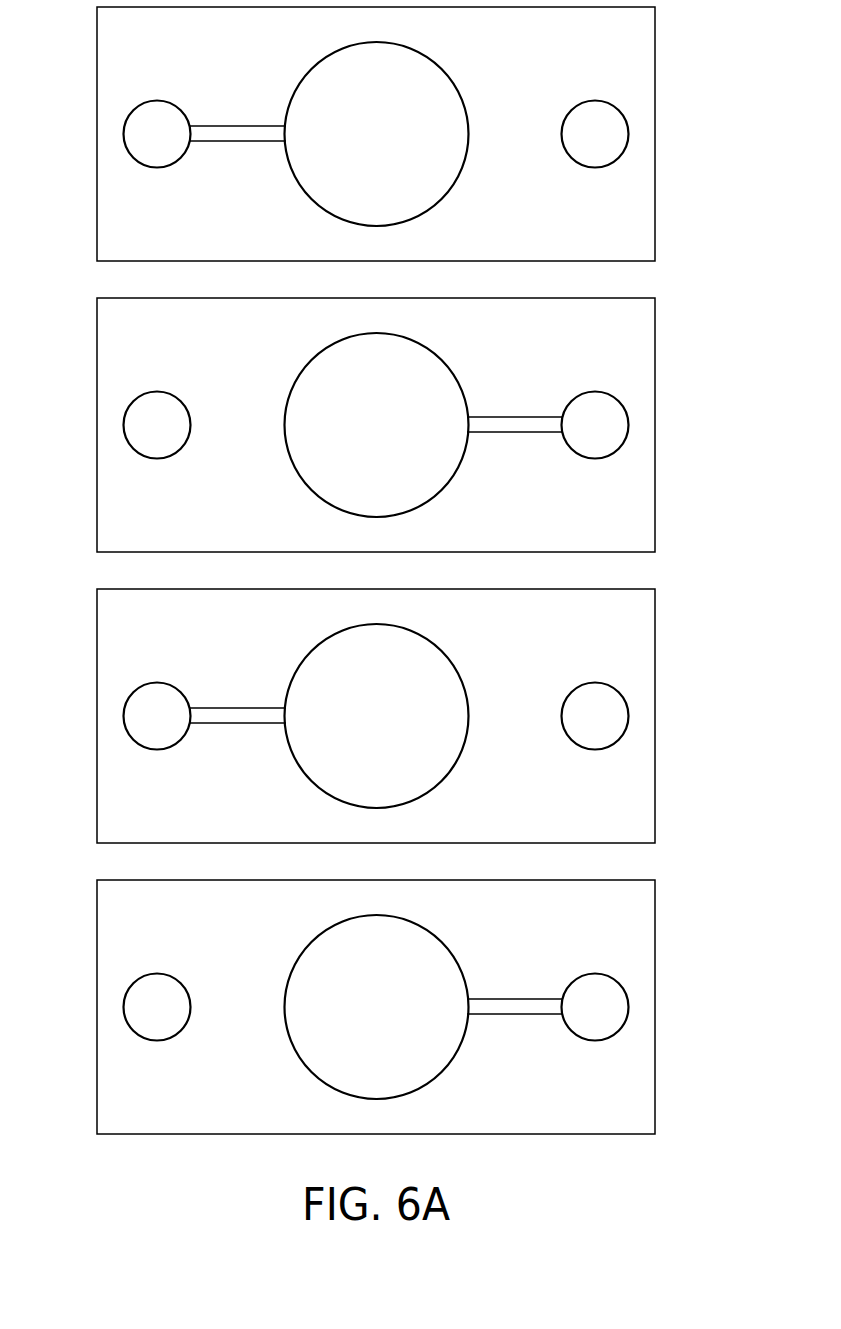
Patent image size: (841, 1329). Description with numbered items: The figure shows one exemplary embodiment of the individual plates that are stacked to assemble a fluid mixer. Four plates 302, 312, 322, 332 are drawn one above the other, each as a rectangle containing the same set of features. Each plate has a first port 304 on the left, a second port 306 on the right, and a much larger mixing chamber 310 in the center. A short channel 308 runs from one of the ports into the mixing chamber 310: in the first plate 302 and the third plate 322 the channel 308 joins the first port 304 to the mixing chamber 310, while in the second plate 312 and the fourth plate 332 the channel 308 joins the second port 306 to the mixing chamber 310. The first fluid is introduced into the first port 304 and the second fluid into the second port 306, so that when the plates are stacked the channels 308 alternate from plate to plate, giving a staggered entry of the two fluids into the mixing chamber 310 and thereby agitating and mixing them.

The plate 302 is at (650, 220).
The first port 304 is at (130, 133).
The second port 306 is at (596, 108).
The channel 308 is at (234, 130).
The mixing chamber 310 is at (438, 81).
The plate 312 is at (650, 511).
The plate 322 is at (650, 802).
The plate 332 is at (650, 1093).